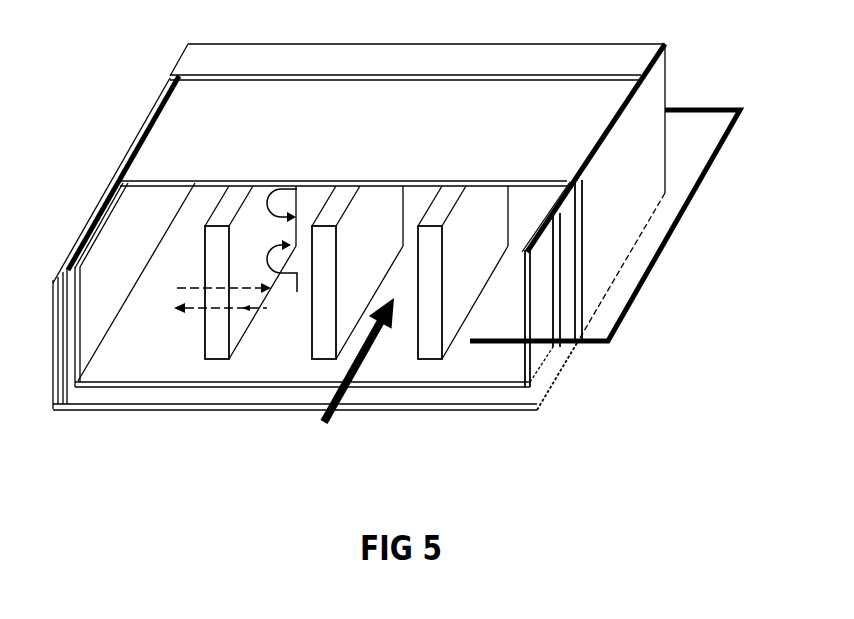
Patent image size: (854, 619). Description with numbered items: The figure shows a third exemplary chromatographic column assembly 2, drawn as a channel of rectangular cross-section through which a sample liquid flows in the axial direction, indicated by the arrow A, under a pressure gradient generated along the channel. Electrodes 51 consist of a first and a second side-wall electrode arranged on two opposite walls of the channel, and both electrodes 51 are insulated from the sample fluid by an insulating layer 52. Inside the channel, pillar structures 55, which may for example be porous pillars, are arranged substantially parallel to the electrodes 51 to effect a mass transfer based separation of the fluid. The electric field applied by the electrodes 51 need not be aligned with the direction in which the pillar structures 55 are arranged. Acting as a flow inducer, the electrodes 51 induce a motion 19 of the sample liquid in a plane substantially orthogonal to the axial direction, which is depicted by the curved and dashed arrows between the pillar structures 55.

The chromatographic column assembly 2 is at (73, 108).
The motion 19 is at (225, 308).
The electrodes 51 is at (70, 390).
The insulating layer 52 is at (485, 379).
The pillar structures 55 is at (235, 203).